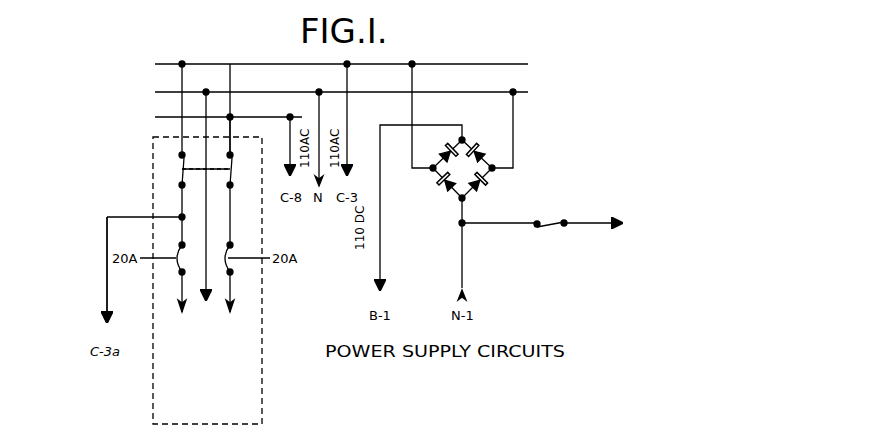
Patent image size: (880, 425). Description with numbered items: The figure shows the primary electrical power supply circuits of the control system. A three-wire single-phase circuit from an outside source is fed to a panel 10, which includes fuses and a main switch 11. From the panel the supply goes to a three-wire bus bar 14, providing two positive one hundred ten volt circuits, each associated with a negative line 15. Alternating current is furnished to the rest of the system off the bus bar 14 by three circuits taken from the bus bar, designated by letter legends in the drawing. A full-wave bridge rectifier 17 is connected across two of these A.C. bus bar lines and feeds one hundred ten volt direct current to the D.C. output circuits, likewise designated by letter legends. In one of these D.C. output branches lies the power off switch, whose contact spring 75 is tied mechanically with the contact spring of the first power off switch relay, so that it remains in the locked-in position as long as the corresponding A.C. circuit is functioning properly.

The panel 10 is at (265, 326).
The main switch 11 is at (176, 176).
The bus bar 14 is at (152, 56).
The negative line 15 is at (206, 236).
The full-wave bridge rectifier 17 is at (497, 161).
The contact spring 75 is at (550, 228).